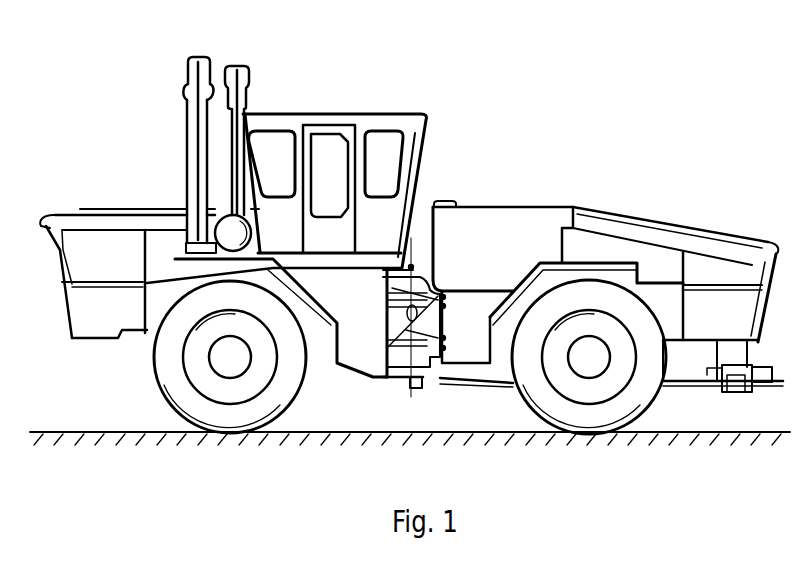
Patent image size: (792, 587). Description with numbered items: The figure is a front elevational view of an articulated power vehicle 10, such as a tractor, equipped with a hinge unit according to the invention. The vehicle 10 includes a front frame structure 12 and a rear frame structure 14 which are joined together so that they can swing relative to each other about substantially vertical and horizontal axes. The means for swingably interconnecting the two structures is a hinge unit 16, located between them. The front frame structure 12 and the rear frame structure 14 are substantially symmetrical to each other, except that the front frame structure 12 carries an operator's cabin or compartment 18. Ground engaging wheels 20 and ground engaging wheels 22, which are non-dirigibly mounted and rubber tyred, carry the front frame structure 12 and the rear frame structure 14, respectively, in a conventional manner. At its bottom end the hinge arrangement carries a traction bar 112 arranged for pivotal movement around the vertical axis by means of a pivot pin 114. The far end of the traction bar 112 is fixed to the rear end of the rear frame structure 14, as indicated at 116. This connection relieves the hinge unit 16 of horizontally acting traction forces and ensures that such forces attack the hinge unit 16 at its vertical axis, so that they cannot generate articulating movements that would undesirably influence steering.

The articulated power vehicle 10 is at (458, 94).
The front frame structure 12 is at (118, 243).
The rear frame structure 14 is at (560, 214).
The hinge unit 16 is at (387, 378).
The operator's cabin 18 is at (288, 122).
The ground engaging wheels 20 is at (160, 392).
The ground engaging wheels 22 is at (642, 427).
The traction bar 112 is at (495, 388).
The pivot pin 114 is at (420, 388).
The connection of traction bar to rear frame structure 116 is at (732, 392).